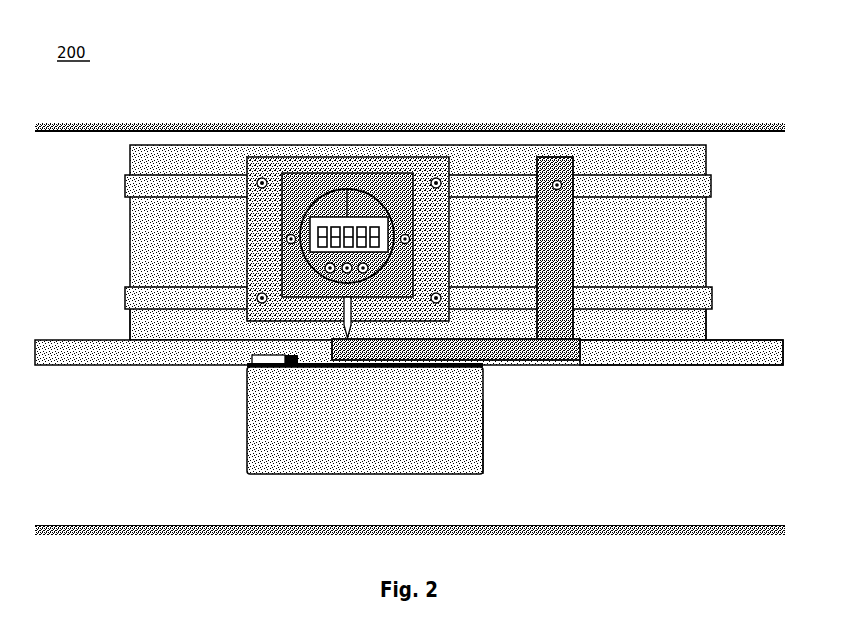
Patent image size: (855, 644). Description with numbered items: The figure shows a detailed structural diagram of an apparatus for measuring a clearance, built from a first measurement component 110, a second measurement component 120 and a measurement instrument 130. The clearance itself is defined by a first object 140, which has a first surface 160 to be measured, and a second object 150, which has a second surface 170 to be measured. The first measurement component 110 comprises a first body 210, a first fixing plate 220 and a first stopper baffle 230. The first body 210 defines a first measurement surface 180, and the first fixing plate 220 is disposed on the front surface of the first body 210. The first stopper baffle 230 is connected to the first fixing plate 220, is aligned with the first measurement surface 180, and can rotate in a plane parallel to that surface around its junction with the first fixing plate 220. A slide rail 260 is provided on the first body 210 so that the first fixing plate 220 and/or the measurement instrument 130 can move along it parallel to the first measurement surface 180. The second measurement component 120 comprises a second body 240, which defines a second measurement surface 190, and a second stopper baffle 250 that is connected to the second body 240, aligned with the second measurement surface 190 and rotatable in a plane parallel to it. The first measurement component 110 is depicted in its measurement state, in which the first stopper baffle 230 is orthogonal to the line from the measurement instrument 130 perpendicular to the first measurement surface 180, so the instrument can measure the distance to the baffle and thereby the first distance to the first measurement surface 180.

The first measurement component 110 is at (698, 165).
The second measurement component 120 is at (464, 468).
The measurement instrument 130 is at (348, 247).
The first object 140 is at (769, 152).
The second object 150 is at (760, 517).
The first surface to be measured 160 is at (39, 342).
The second surface to be measured 170 is at (767, 363).
The first measurement surface 180 is at (699, 338).
The second measurement surface 190 is at (313, 368).
The first body 210 is at (703, 250).
The first fixing plate 220 is at (576, 260).
The first stopper baffle 230 is at (453, 347).
The second body 240 is at (474, 428).
The second stopper baffle 250 is at (272, 360).
The slide rail 260 is at (698, 302).